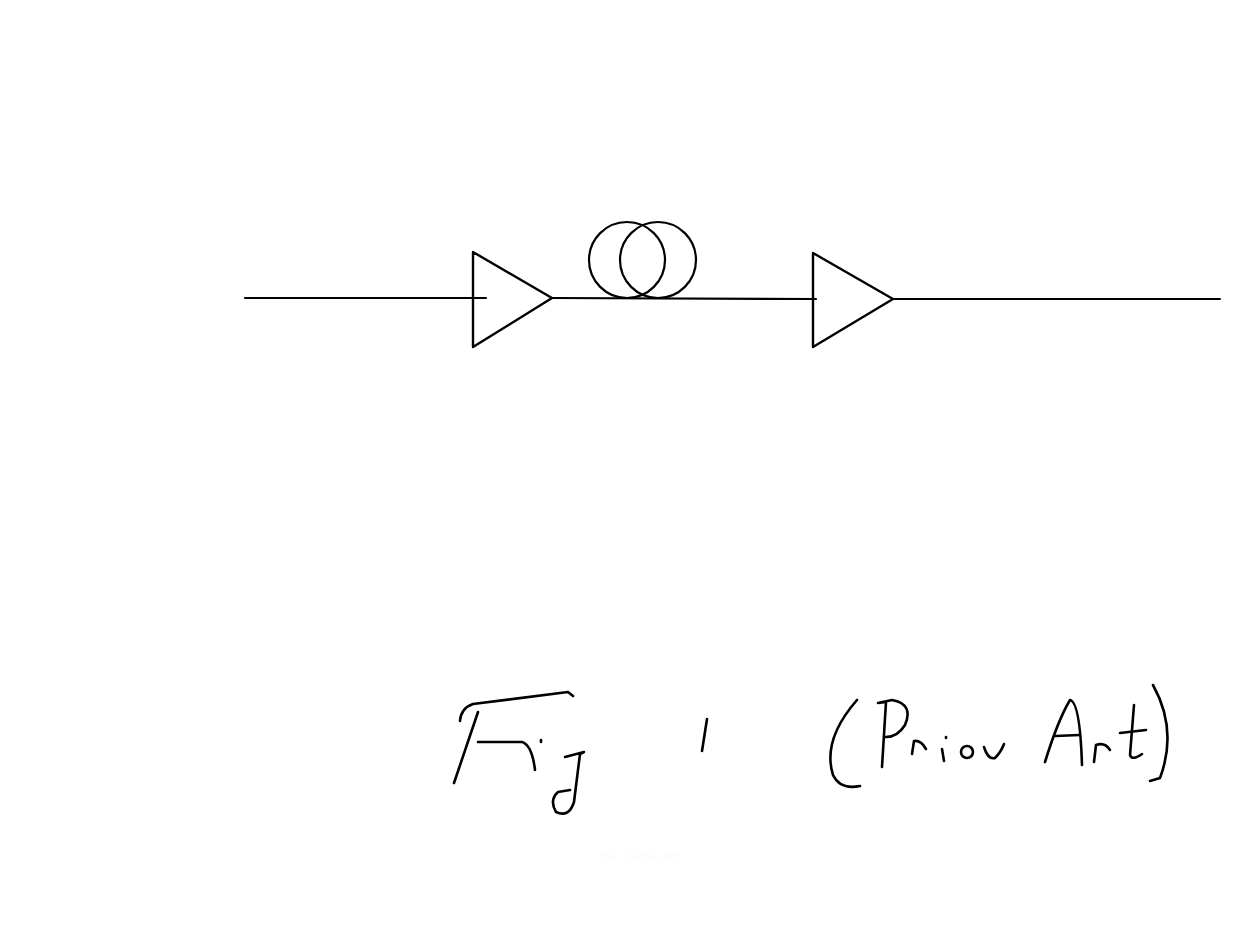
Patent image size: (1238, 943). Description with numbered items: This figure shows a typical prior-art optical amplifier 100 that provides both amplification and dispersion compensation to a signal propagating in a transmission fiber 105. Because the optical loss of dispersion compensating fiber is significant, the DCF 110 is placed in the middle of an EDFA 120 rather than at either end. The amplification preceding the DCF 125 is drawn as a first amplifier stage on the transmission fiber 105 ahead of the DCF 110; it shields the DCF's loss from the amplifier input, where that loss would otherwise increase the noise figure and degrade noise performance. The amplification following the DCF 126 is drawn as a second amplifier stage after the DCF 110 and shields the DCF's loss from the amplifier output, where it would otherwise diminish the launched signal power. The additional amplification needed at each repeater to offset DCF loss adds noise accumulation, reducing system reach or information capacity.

The optical amplifier 100 is at (990, 40).
The transmission fiber 105 is at (286, 296).
The DCF 110 is at (672, 222).
The EDFA 120 is at (666, 455).
The amplification preceding the DCF 125 is at (507, 333).
The amplification following the DCF 126 is at (855, 333).